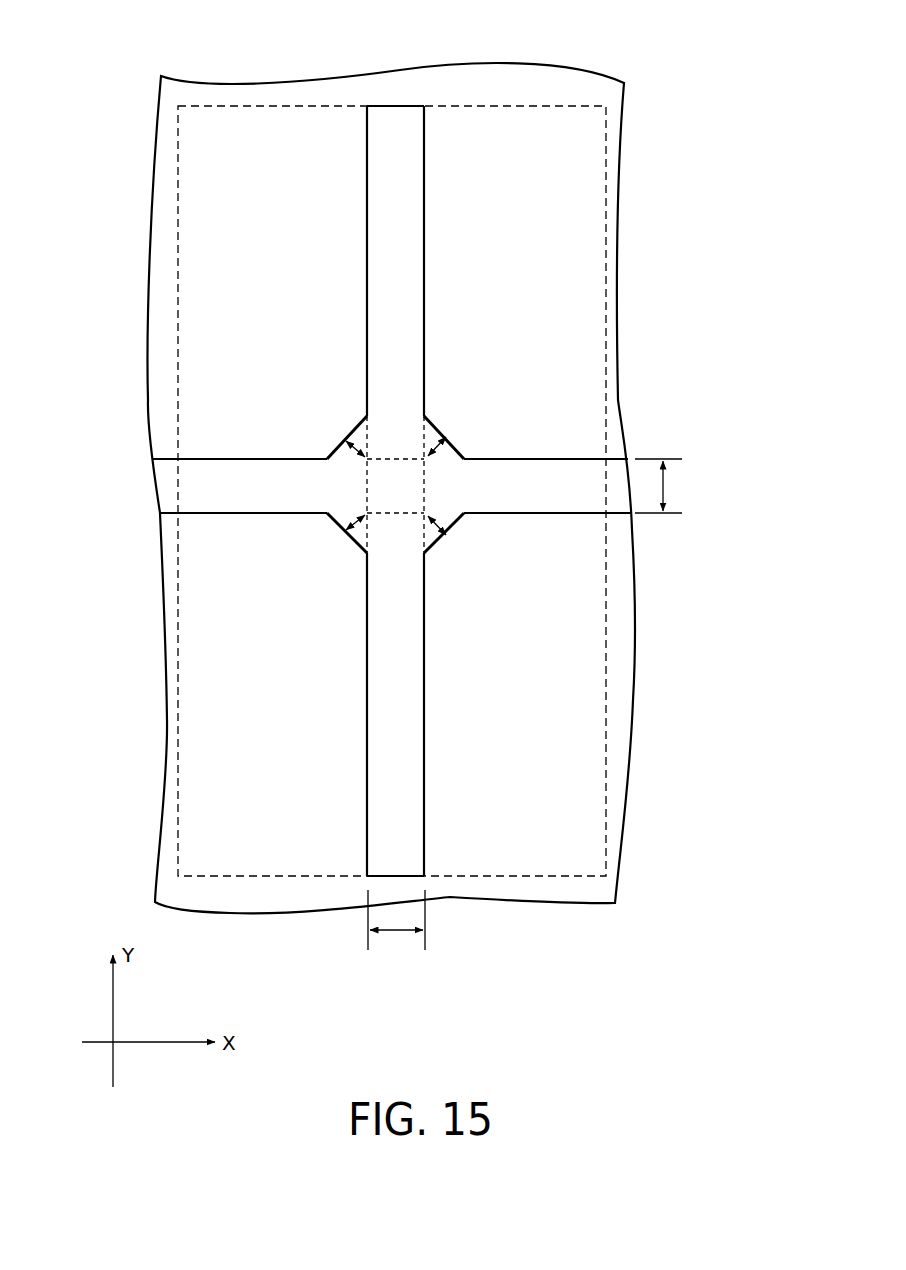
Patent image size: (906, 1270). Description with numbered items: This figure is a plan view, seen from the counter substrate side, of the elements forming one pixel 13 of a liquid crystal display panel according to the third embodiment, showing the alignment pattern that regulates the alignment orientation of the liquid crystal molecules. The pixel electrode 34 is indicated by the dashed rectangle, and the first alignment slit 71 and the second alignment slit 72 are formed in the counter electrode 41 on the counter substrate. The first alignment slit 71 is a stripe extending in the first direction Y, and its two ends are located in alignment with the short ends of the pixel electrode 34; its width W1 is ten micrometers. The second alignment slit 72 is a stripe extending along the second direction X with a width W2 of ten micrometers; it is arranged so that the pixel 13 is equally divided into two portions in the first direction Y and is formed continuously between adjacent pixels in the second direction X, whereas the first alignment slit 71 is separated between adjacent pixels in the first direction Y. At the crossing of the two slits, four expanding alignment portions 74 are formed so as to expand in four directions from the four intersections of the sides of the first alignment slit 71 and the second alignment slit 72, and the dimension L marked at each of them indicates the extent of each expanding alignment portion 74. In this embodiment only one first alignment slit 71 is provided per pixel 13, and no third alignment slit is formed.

The pixel 13 is at (576, 96).
The pixel electrode 34 is at (606, 147).
The counter electrode 41 is at (620, 200).
The first alignment slit 71 is at (424, 127).
The second alignment slit 72 is at (198, 458).
The expanding alignment portion 74 is at (437, 430).
The chamfer length L is at (433, 519).
The width of the first alignment slit W1 is at (396, 930).
The width of the second alignment slit W2 is at (673, 486).